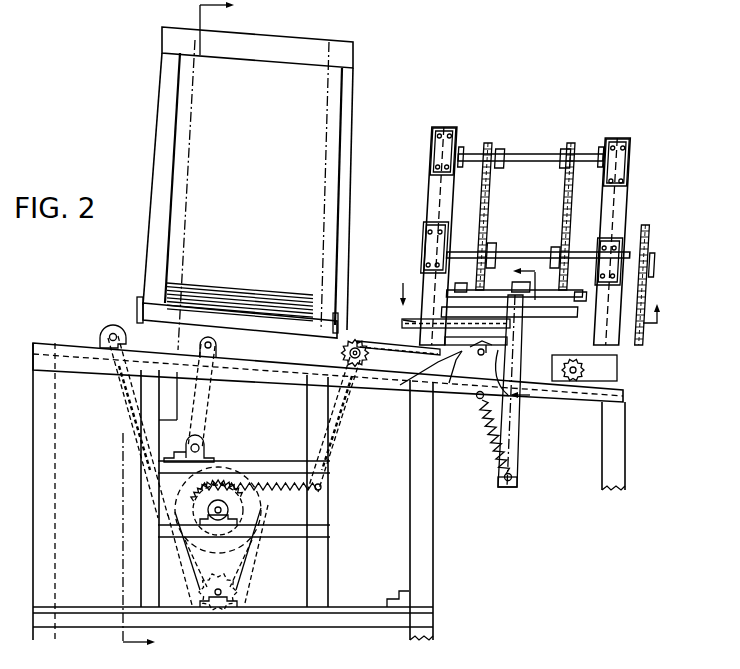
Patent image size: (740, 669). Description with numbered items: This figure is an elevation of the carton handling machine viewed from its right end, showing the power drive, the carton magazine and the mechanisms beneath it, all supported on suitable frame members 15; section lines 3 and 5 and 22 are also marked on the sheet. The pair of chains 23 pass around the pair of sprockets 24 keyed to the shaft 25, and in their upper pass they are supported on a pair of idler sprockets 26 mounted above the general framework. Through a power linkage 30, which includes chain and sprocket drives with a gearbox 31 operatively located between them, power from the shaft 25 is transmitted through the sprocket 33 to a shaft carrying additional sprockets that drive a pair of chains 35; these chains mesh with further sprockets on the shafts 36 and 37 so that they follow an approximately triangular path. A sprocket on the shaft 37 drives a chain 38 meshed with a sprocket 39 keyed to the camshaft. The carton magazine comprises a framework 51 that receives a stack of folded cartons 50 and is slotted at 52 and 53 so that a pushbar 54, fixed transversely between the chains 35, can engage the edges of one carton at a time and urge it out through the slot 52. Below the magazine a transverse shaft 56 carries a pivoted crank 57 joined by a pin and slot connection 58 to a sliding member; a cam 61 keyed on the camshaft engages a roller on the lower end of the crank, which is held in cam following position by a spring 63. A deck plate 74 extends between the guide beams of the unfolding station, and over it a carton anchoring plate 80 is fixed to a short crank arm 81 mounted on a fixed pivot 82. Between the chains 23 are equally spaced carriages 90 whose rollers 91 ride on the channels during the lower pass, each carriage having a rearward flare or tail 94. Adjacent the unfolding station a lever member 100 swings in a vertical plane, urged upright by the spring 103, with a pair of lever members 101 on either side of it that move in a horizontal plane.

The frame members 15 is at (322, 571).
The sprockets 22 is at (536, 236).
The chains 23 is at (490, 200).
The sprockets 24 is at (554, 250).
The shaft 25 is at (510, 165).
The idler sprockets 26 is at (499, 150).
The section line 3- 3 is at (529, 334).
The power linkage 30 is at (384, 397).
The gearbox 31 is at (618, 380).
The sprocket 33 is at (362, 364).
The chains 35 is at (338, 418).
The shaft 36 is at (114, 333).
The shaft 37 is at (220, 597).
The chain 38 is at (245, 548).
The sprocket 39 is at (250, 508).
The section line 5- 5 is at (187, 334).
The folded cartons 50 is at (222, 285).
The framework 51 is at (165, 153).
The slot 52 is at (337, 332).
The slot 53 is at (131, 319).
The pushbar 54 is at (126, 438).
The transverse shaft 56 is at (205, 448).
The crank 57 is at (204, 415).
The pin and slot connection 58 is at (217, 347).
The cam 61 is at (240, 500).
The spring 63 is at (321, 485).
The deck plate 74 is at (499, 353).
The carton anchoring plate 80 is at (487, 340).
The crank arm 81 is at (431, 375).
The fixed pivot 82 is at (451, 375).
The carriages 90 is at (516, 293).
The rollers 91 is at (465, 292).
The flare 94 is at (560, 312).
The lever member 100 is at (518, 450).
The lever members 101 is at (410, 320).
The spring 103 is at (492, 445).